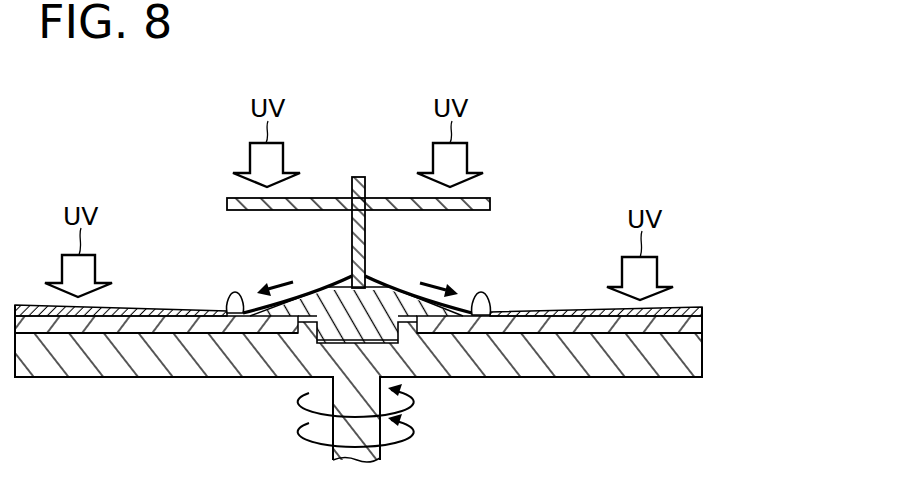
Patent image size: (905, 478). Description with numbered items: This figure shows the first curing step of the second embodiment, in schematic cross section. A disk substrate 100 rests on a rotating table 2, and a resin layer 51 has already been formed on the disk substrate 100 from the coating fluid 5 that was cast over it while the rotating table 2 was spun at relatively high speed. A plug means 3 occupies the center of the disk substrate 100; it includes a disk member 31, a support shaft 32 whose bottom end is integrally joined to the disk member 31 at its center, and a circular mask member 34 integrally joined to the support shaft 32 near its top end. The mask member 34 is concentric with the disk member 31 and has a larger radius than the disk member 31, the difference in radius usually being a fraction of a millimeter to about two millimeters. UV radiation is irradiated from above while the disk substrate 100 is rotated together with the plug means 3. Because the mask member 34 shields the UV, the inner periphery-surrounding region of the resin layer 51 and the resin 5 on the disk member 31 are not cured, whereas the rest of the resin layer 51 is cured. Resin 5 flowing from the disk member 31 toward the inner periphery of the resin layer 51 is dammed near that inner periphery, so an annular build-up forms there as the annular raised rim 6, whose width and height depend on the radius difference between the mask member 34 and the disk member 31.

The rotating table 2 is at (697, 362).
The plug means 3 is at (413, 260).
The coating fluid (resin) 5 is at (343, 278).
The annular raised rim 6 is at (230, 298).
The disk member 31 is at (378, 288).
The support shaft 32 is at (365, 225).
The mask member 34 is at (492, 208).
The resin layer 51 is at (157, 305).
The disk substrate 100 is at (697, 323).